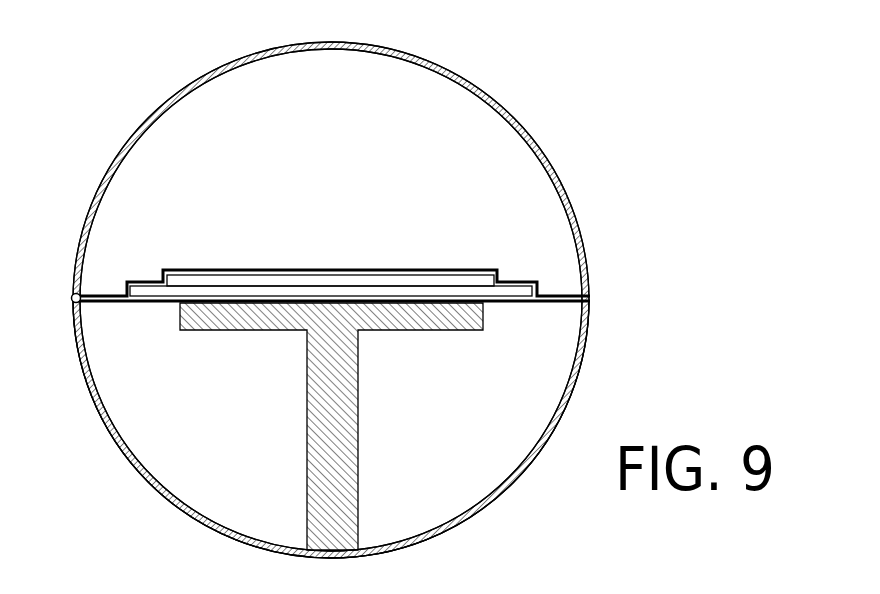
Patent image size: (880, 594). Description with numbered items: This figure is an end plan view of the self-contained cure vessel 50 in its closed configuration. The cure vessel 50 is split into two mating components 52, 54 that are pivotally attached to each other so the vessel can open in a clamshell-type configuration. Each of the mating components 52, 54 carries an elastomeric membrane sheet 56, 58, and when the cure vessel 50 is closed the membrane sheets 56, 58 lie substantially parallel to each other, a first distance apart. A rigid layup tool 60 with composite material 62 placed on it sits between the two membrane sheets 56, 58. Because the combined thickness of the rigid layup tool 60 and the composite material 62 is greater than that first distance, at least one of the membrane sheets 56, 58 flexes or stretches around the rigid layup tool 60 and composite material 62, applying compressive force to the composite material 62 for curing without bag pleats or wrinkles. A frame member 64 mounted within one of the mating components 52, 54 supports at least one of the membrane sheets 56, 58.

The self-contained cure vessel 50 is at (588, 94).
The mating component 52 is at (556, 172).
The mating component 54 is at (128, 462).
The membrane sheet 56 is at (195, 268).
The membrane sheet 58 is at (523, 303).
The rigid layup tool 60 is at (400, 293).
The composite material 62 is at (231, 282).
The frame member 64 is at (351, 414).